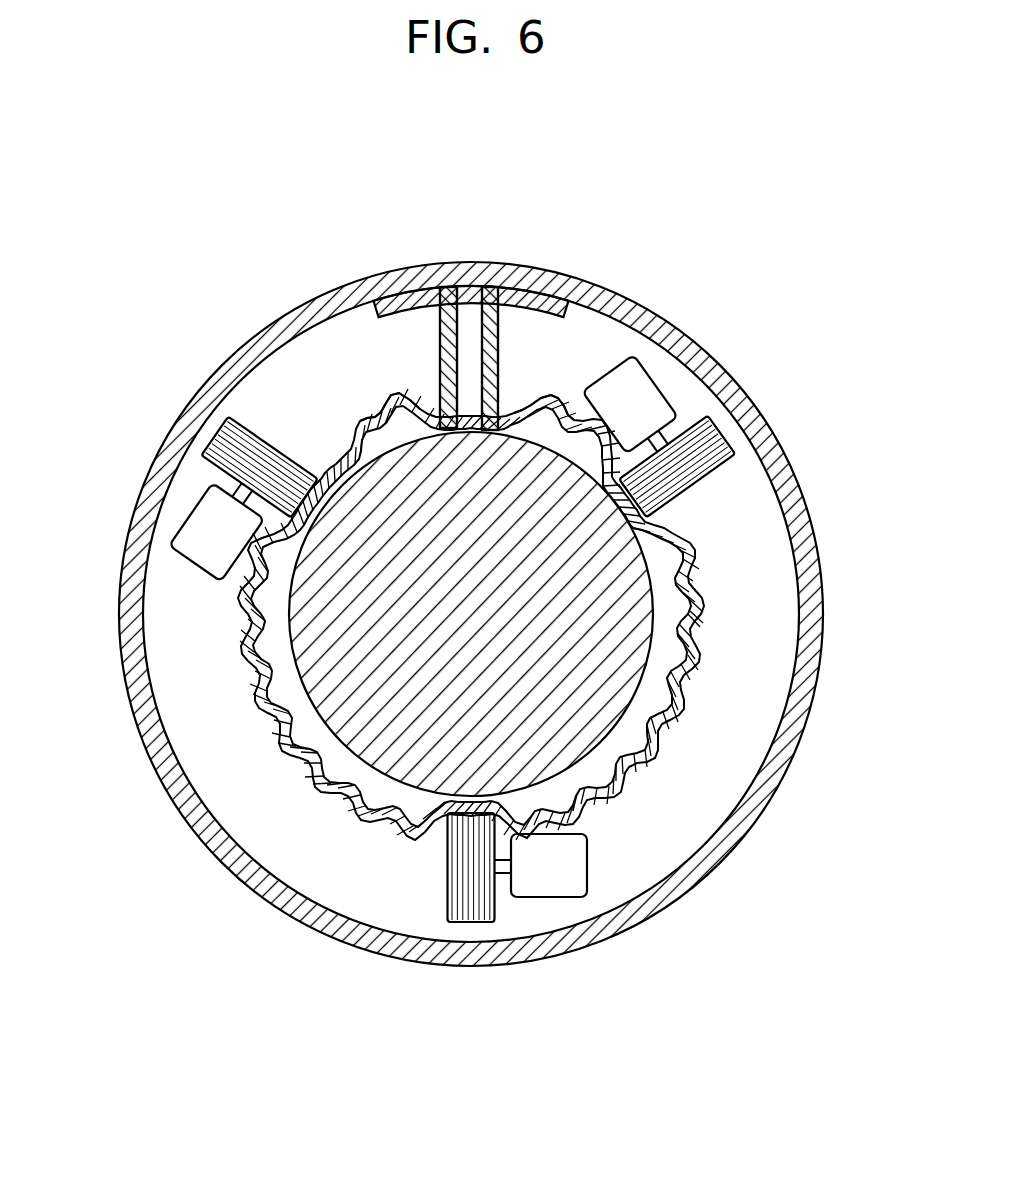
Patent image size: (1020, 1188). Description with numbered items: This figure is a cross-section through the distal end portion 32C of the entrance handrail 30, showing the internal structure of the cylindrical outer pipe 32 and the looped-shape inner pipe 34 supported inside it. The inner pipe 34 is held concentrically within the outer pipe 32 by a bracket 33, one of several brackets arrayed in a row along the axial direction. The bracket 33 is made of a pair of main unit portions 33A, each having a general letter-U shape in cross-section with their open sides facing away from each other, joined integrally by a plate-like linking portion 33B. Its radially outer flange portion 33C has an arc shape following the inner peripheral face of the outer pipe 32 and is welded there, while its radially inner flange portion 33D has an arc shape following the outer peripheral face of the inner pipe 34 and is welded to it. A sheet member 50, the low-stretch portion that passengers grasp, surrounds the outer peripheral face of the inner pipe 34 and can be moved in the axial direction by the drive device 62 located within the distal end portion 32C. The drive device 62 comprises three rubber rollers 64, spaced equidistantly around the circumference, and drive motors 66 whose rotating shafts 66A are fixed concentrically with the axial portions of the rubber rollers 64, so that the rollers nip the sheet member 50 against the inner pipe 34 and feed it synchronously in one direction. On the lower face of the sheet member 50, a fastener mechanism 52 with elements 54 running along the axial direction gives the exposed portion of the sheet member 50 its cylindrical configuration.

The entrance handrail 30 is at (475, 586).
The outer pipe 32 is at (522, 614).
The distal end portion 32C is at (805, 626).
The bracket 33 is at (418, 288).
The main unit portion 33A is at (470, 300).
The linking portion 33B is at (457, 337).
The flange portion 33C is at (552, 290).
The flange portion 33D is at (400, 397).
The inner pipe 34 is at (303, 707).
The sheet member 50 is at (546, 600).
The fastener mechanism 52 is at (422, 375).
The element 54 is at (500, 395).
The drive device 62 is at (444, 630).
The rubber roller 64 is at (471, 912).
The drive motor 66 is at (548, 883).
The rotating shaft 66A is at (502, 873).